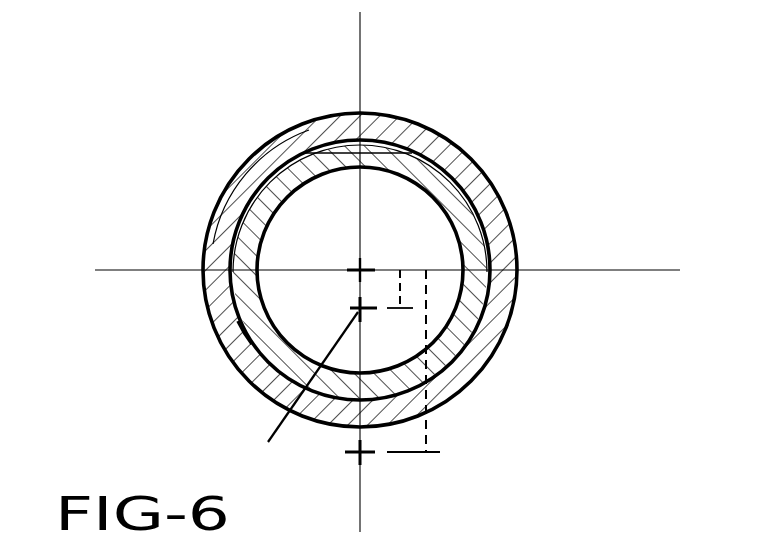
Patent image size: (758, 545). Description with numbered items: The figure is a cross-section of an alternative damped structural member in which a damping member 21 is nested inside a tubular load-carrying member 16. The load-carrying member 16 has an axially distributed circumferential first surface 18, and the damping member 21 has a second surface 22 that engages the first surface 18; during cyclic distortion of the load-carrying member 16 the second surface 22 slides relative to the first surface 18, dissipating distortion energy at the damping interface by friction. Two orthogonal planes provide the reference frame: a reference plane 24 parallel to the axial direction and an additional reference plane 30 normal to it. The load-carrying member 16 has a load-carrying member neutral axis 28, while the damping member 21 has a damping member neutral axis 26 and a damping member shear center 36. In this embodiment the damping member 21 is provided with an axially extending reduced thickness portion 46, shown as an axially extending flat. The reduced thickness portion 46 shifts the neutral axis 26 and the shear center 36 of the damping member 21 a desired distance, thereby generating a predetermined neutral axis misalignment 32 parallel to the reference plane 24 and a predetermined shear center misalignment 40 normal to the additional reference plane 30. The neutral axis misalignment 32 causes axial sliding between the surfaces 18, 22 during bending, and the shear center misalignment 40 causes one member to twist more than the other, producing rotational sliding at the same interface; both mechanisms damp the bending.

The load-carrying member 16 is at (467, 167).
The first surface 18 is at (350, 308).
The damping member 21 is at (467, 217).
The second surface 22 is at (240, 330).
The reference plane 24 is at (362, 76).
The damping member neutral axis 26 is at (299, 398).
The load-carrying member neutral axis 28 is at (357, 268).
The additional reference plane 30 is at (623, 270).
The neutral axis misalignment 32 is at (400, 285).
The damping member shear center 36 is at (367, 457).
The shear center misalignment 40 is at (428, 423).
The reduced thickness portion 46 is at (347, 162).